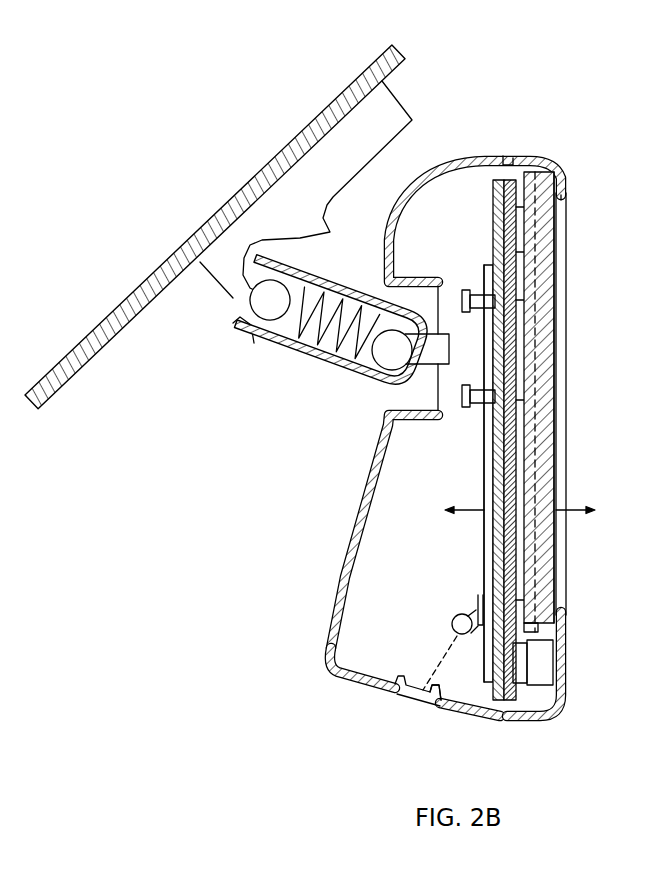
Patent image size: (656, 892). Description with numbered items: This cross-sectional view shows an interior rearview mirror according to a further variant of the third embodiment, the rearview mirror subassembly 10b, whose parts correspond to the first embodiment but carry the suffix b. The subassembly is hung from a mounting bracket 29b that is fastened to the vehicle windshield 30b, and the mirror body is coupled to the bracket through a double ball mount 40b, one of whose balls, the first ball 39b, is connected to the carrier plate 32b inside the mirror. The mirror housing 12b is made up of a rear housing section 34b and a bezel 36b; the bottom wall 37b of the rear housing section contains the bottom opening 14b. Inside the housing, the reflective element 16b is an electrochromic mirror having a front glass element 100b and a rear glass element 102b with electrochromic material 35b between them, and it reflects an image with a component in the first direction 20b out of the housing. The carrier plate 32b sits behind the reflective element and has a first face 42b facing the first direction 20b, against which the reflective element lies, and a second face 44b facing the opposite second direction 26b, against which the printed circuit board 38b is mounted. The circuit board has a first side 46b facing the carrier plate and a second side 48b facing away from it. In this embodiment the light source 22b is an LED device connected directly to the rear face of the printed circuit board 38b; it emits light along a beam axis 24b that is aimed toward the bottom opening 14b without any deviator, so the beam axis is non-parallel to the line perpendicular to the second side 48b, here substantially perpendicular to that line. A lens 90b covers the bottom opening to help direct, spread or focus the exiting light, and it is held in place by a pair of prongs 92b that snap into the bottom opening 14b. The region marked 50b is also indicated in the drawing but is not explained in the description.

The rearview mirror subassembly 10b is at (596, 124).
The mirror housing 12b is at (528, 150).
The bottom opening 14b is at (401, 697).
The reflective element 16b is at (574, 209).
The first direction 20b is at (574, 510).
The light source 22b is at (446, 618).
The beam axis 24b is at (440, 658).
The second direction 26b is at (467, 512).
The mounting bracket 29b is at (407, 96).
The windshield 30b is at (105, 362).
The carrier plate 32b is at (530, 379).
The rear housing section 34b is at (333, 628).
The electrochromic material 35b is at (542, 236).
The bezel 36b is at (545, 719).
The bottom wall 37b is at (365, 689).
The printed circuit board 38b is at (484, 465).
The first ball 39b is at (368, 388).
The double ball mount 40b is at (253, 373).
The first face 42b is at (514, 388).
The second face 44b is at (493, 214).
The first side 46b is at (518, 443).
The second side 48b is at (484, 447).
The clearance 50b is at (556, 297).
The lens 90b is at (422, 708).
The prongs 92b is at (442, 694).
The front glass element 100b is at (556, 568).
The rear glass element 102b is at (545, 591).